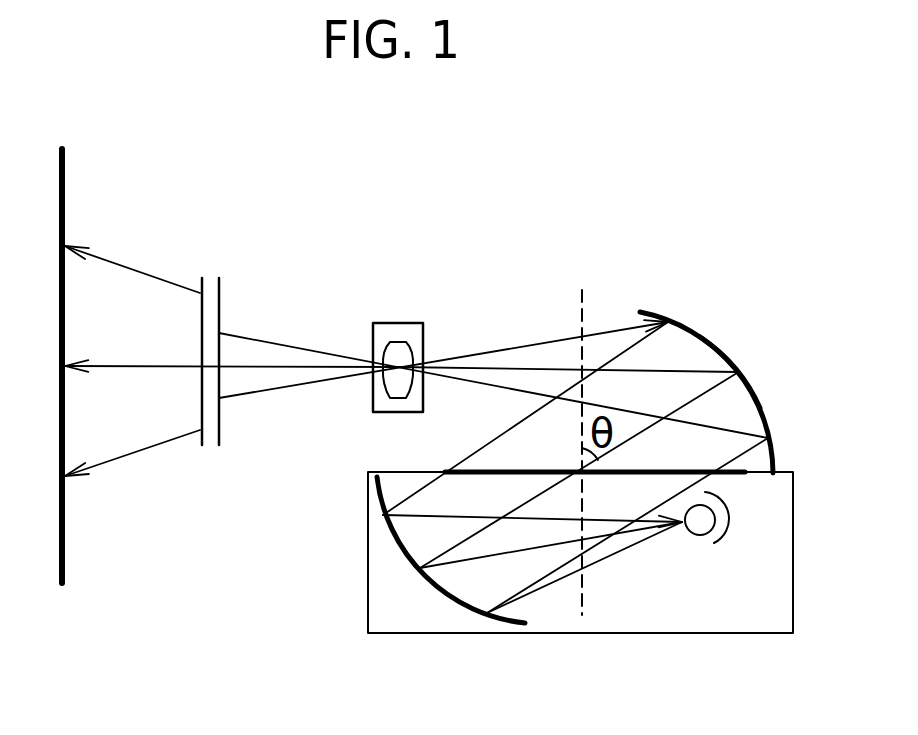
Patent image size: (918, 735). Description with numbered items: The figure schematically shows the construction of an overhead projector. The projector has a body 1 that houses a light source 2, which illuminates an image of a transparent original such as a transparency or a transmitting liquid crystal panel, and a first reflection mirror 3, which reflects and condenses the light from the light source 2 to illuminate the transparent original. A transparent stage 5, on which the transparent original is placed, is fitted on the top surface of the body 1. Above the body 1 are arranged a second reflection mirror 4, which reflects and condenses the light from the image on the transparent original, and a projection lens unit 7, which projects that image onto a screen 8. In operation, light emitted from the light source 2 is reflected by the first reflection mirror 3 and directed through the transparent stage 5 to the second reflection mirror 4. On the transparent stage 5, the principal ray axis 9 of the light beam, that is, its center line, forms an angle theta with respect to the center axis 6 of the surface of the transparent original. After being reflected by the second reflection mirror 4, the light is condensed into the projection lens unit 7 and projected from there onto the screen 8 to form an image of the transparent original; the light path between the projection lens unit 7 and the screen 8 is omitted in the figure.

The body 1 is at (367, 568).
The light source 2 is at (690, 546).
The first reflection mirror 3 is at (452, 600).
The second reflection mirror 4 is at (760, 398).
The transparent stage 5 is at (503, 468).
The center axis 6 is at (583, 290).
The projection lens unit 7 is at (400, 323).
The screen 8 is at (66, 172).
The principal ray axis 9 is at (738, 385).